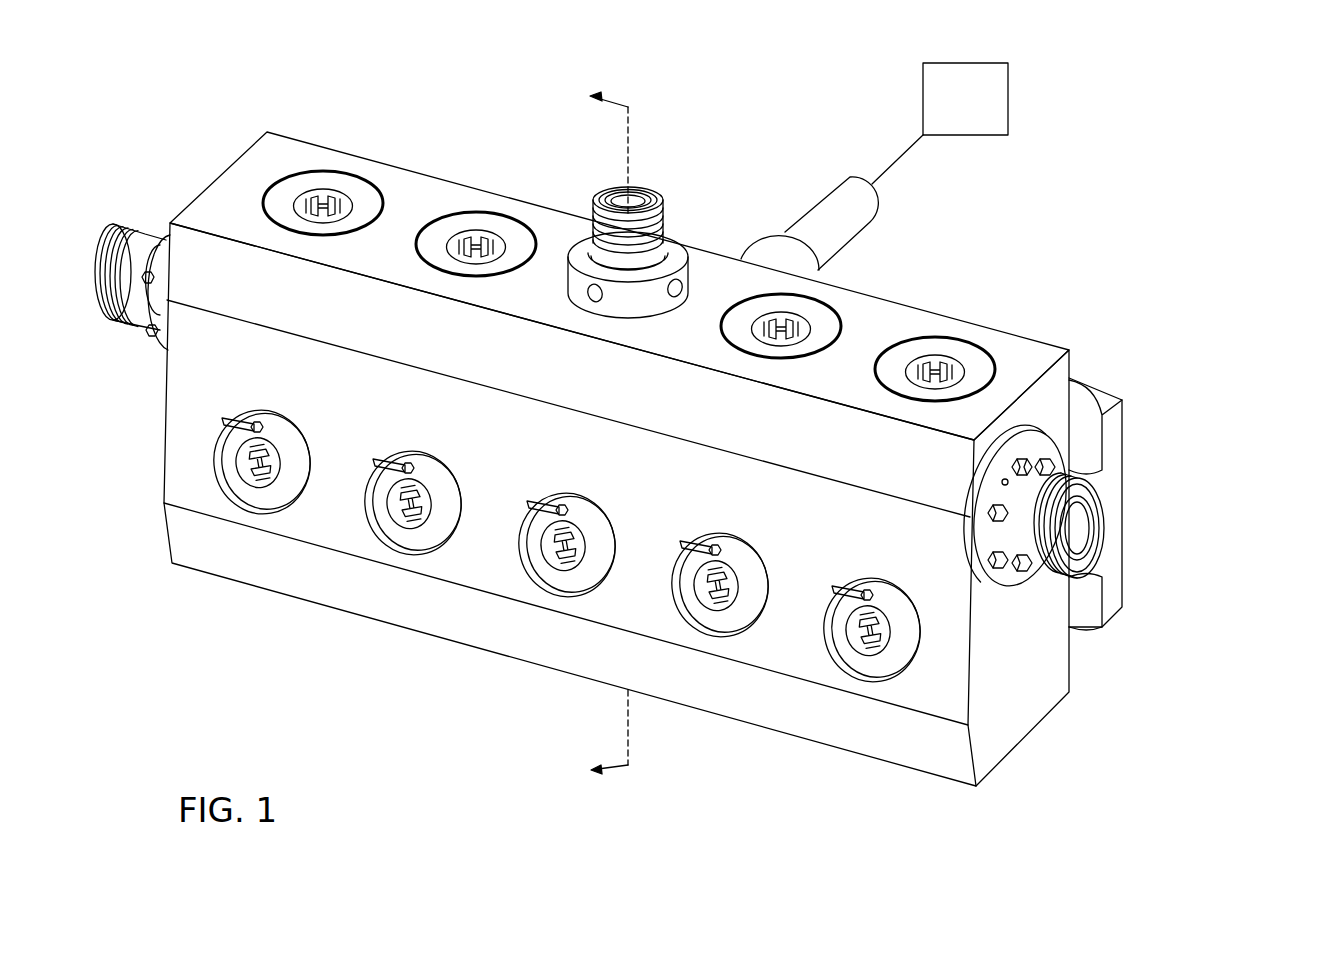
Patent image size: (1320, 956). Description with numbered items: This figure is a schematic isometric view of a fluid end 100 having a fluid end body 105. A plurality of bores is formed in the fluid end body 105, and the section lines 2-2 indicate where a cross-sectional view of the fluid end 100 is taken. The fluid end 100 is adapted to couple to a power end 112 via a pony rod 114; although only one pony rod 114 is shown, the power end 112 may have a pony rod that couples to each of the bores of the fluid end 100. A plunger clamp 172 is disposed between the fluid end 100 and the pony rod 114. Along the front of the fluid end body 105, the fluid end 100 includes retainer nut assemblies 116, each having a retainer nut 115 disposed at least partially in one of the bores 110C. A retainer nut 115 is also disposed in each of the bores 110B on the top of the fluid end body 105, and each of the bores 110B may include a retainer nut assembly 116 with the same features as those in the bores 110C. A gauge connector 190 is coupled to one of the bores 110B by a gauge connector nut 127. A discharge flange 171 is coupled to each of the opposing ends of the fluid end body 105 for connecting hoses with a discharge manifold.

The fluid end 100 is at (1220, 82).
The fluid end body 105 is at (305, 152).
The bores 110B is at (420, 244).
The bores 110C is at (530, 578).
The power end 112 is at (947, 113).
The pony rod 114 is at (850, 243).
The retainer nut 115 is at (470, 225).
The retainer nut assembly 116 is at (266, 404).
The gauge connector nut 127 is at (573, 272).
The discharge flange 171 is at (133, 222).
The plunger clamp 172 is at (765, 225).
The gauge connector 190 is at (648, 190).
The section lines 2- 2 is at (599, 431).